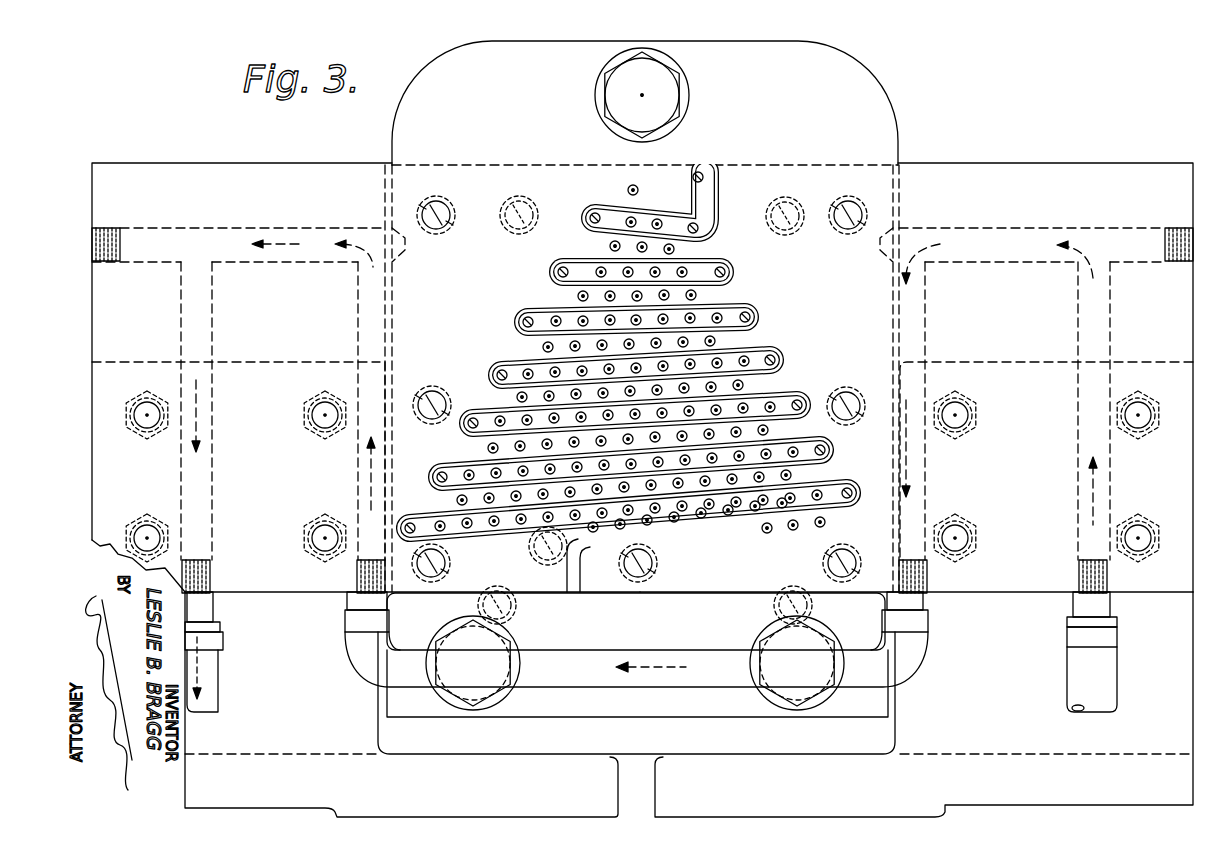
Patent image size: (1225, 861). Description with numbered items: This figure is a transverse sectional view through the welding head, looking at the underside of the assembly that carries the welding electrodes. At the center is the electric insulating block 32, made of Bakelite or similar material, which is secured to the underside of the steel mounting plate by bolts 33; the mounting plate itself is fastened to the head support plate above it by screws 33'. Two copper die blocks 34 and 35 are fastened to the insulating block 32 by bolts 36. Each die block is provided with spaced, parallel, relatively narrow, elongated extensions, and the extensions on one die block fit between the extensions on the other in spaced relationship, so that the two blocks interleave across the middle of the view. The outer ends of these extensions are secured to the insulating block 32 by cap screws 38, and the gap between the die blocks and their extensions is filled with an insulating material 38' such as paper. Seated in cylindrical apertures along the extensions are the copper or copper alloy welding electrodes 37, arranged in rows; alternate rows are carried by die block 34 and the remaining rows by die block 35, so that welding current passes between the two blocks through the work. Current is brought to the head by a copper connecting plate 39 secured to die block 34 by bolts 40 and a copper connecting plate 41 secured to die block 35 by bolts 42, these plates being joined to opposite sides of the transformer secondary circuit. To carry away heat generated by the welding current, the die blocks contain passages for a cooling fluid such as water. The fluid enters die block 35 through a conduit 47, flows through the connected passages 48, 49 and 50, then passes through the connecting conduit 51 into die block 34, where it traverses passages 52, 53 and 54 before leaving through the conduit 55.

The electric insulating block 32 is at (835, 62).
The bolts 33 is at (635, 399).
The screws 33' is at (617, 396).
The copper die block 34 is at (160, 180).
The copper die block 35 is at (1043, 165).
The bolts 36 is at (448, 205).
The welding electrodes 37 is at (691, 297).
The cap screws 38 is at (641, 370).
The insulating material 38' is at (643, 366).
The copper connecting plate 39 is at (282, 362).
The bolts 40 is at (147, 515).
The copper connecting plate 41 is at (1145, 362).
The bolts 42 is at (978, 420).
The conduit 47 is at (1110, 678).
The passage 48 is at (1078, 435).
The passage 49 is at (1012, 262).
The passage 50 is at (925, 477).
The connecting conduit 51 is at (600, 680).
The passage 52 is at (358, 455).
The passage 53 is at (302, 262).
The passage 54 is at (212, 440).
The conduit 55 is at (215, 678).